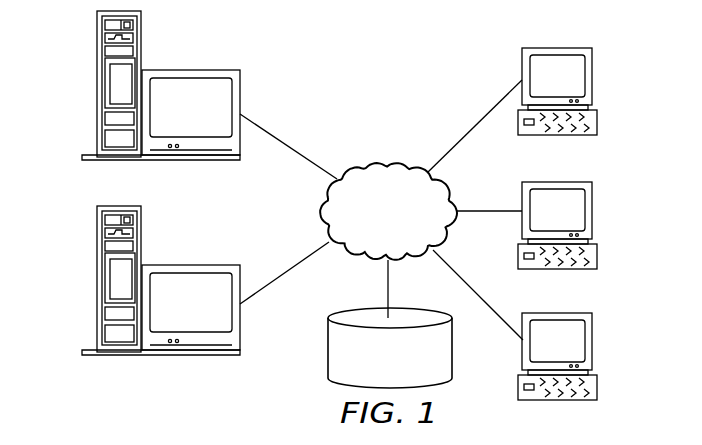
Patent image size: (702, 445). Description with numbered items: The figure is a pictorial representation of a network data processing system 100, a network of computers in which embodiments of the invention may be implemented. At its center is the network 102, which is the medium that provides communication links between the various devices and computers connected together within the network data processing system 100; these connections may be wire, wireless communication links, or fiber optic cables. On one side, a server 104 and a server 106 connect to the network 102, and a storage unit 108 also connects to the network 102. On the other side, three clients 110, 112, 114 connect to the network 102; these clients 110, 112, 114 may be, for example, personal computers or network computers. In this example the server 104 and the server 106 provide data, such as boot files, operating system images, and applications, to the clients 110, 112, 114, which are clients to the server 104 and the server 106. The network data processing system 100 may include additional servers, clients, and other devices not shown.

The network data processing system 100 is at (437, 60).
The network 102 is at (360, 165).
The server 104 is at (97, 85).
The server 106 is at (97, 280).
The storage unit 108 is at (328, 358).
The client 110 is at (593, 76).
The client 112 is at (593, 210).
The client 114 is at (593, 340).